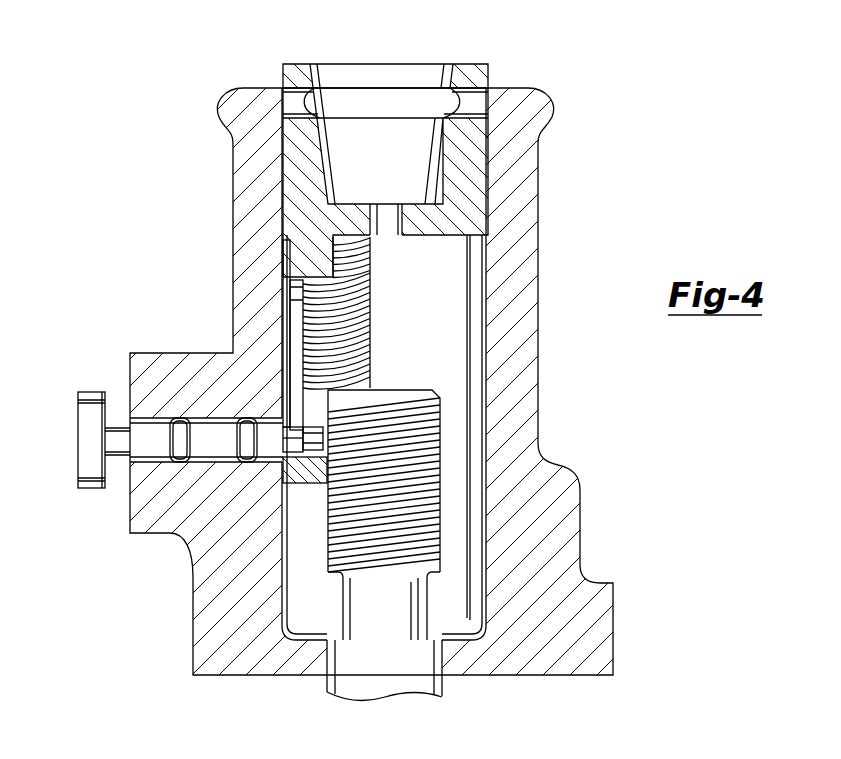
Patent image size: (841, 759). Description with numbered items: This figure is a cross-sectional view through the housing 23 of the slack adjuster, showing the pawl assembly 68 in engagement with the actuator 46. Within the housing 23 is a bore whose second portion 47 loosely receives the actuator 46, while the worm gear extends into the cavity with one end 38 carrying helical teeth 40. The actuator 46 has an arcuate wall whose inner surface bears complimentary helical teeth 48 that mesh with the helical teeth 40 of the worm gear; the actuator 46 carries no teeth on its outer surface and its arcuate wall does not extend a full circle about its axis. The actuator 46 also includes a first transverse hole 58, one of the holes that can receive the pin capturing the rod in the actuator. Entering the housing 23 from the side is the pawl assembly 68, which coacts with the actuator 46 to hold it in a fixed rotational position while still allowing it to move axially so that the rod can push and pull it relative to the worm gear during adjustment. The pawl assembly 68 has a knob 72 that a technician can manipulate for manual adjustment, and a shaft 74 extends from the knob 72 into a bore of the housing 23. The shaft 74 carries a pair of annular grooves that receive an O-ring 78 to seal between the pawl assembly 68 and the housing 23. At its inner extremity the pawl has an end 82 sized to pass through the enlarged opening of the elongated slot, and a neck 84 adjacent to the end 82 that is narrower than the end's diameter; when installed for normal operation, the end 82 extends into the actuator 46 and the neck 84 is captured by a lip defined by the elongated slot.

The housing 23 is at (524, 270).
The end of worm gear 38 is at (450, 398).
The helical teeth 40 is at (378, 558).
The actuator 46 is at (473, 176).
The second portion of the bore 47 is at (483, 319).
The complimentary helical teeth 48 is at (360, 292).
The first transverse hole 58 is at (481, 98).
The pawl assembly 68 is at (148, 464).
The knob 72 is at (78, 418).
The shaft 74 is at (216, 421).
The O-ring 78 is at (247, 449).
The end of the pawl 82 is at (312, 428).
The neck 84 is at (296, 452).